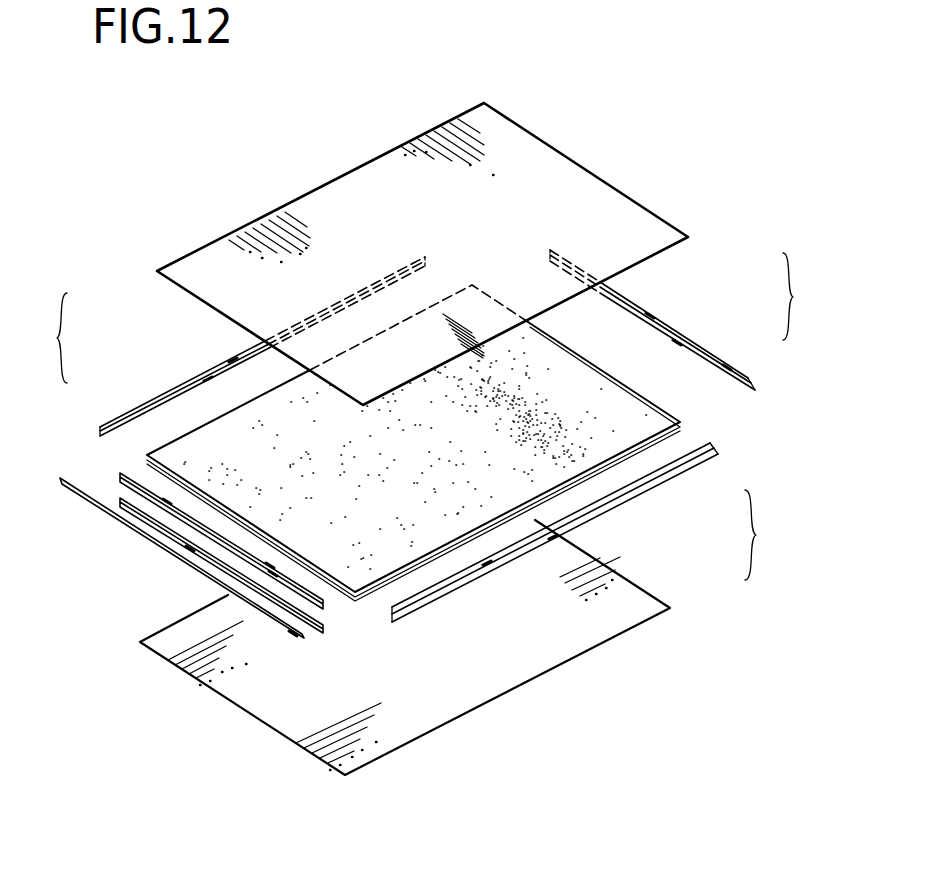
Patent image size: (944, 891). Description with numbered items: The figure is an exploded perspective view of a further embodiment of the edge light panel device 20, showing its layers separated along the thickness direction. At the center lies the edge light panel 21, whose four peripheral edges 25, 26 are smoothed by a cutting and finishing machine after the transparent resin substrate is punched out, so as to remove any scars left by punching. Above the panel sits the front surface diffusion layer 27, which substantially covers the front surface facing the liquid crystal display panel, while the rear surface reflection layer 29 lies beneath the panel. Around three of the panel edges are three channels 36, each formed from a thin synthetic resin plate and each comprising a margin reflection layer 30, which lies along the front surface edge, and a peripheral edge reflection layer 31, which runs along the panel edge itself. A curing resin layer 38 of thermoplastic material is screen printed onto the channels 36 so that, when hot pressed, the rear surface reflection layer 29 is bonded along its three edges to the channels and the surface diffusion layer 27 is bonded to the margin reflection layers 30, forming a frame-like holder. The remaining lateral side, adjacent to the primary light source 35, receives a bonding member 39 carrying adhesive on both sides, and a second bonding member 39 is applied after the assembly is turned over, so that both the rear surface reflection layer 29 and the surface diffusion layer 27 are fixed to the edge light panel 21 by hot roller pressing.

The edge light panel device 20 is at (673, 657).
The edge light panel 21 is at (645, 396).
The peripheral edge 25 is at (340, 593).
The peripheral edge 26 is at (590, 355).
The surface diffusion layer 27 is at (283, 207).
The rear surface reflection layer 29 is at (553, 670).
The margin reflection layer 30 is at (180, 390).
The peripheral edge reflection layer 31 is at (137, 405).
The primary light source 35 is at (160, 550).
The channel 36 is at (428, 436).
The curing resin layer 38 is at (667, 318).
The bonding member 39 is at (127, 477).